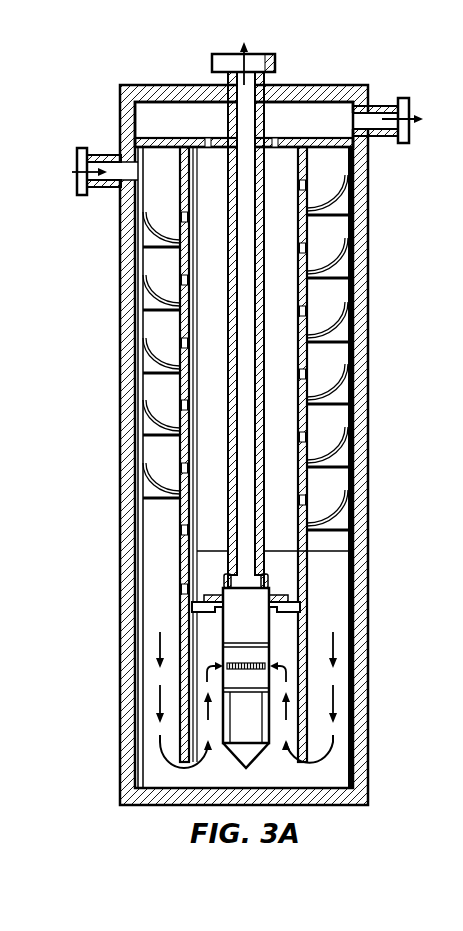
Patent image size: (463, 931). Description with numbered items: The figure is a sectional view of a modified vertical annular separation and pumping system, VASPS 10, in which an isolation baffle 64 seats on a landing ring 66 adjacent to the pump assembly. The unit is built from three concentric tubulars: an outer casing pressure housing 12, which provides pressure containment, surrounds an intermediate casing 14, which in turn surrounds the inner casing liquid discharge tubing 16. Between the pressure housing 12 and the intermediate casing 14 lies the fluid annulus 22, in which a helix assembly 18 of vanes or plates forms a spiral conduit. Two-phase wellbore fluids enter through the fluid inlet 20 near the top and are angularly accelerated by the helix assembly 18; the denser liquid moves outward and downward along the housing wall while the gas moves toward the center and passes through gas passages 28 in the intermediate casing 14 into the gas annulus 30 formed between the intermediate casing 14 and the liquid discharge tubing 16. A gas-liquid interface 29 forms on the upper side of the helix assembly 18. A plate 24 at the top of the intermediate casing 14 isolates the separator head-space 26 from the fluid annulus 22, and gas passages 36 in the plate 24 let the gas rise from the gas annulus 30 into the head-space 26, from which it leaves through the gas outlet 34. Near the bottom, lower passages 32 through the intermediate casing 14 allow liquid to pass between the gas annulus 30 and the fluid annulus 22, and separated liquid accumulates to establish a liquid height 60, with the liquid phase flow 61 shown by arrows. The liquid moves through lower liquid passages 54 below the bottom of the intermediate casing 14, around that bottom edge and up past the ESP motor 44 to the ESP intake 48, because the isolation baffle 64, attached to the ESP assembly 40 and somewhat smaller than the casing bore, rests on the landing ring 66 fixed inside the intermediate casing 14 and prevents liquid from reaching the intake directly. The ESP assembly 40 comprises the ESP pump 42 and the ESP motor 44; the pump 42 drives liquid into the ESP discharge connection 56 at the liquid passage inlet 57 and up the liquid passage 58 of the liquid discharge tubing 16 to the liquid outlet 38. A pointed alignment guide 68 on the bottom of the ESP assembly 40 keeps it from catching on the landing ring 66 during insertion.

The VASPS 10 is at (121, 76).
The outer casing pressure housing 12 is at (368, 196).
The intermediate casing 14 is at (306, 240).
The inner casing liquid discharge tubing 16 is at (308, 343).
The helix assembly 18 is at (146, 300).
The fluid inlet 20 is at (83, 152).
The fluid annulus 22 is at (153, 203).
The plate 24 is at (330, 140).
The separator head-space 26 is at (153, 112).
The gas passages 28 is at (148, 272).
The gas-liquid interface 29 is at (140, 236).
The gas annulus 30 is at (208, 392).
The lower passages 32 is at (183, 470).
The gas outlet 34 is at (404, 100).
The gas passages 36 is at (208, 138).
The liquid outlet 38 is at (266, 58).
The ESP assembly 40 is at (223, 627).
The ESP pump 42 is at (258, 628).
The ESP motor 44 is at (260, 728).
The ESP intake 48 is at (227, 658).
The lower liquid passages 54 is at (182, 782).
The ESP discharge connection 56 is at (224, 586).
The liquid passage inlet 57 is at (224, 577).
The liquid passage 58 is at (248, 440).
The liquid height 60 is at (340, 551).
The liquid phase flow 61 is at (340, 693).
The isolation baffle 64 is at (288, 599).
The landing ring 66 is at (300, 608).
The alignment guide 68 is at (250, 770).